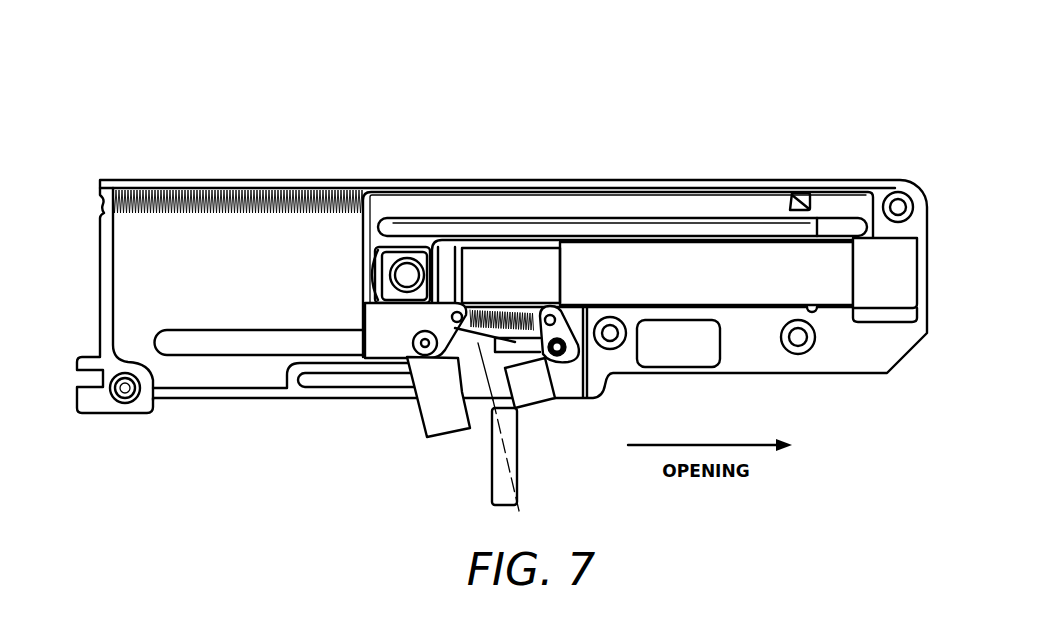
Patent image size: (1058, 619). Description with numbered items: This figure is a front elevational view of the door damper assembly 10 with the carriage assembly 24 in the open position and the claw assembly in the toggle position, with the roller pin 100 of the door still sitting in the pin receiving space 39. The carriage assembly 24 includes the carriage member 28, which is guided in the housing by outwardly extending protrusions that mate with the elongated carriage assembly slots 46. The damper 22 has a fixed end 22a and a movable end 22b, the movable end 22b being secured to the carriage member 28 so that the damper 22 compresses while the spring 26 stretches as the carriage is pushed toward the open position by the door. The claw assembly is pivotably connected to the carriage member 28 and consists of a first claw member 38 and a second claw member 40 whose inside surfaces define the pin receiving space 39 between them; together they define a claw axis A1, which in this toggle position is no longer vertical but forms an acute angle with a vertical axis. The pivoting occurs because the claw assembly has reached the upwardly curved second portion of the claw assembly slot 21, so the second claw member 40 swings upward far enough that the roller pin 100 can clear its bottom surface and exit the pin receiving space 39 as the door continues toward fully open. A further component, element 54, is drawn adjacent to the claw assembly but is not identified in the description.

The door damper assembly 10 is at (908, 122).
The claw assembly slot 21 is at (303, 382).
The damper 22 is at (667, 267).
The fixed end 22a is at (884, 267).
The movable end 22b is at (387, 258).
The carriage assembly 24 is at (346, 250).
The spring 26 is at (296, 185).
The carriage member 28 is at (375, 315).
The first claw member 38 is at (432, 425).
The pin receiving space 39 is at (480, 427).
The second claw member 40 is at (527, 385).
The carriage assembly slots 46 is at (178, 340).
The link lever 54 is at (557, 352).
The roller pin 100 is at (518, 440).
The claw axis A1 is at (508, 499).